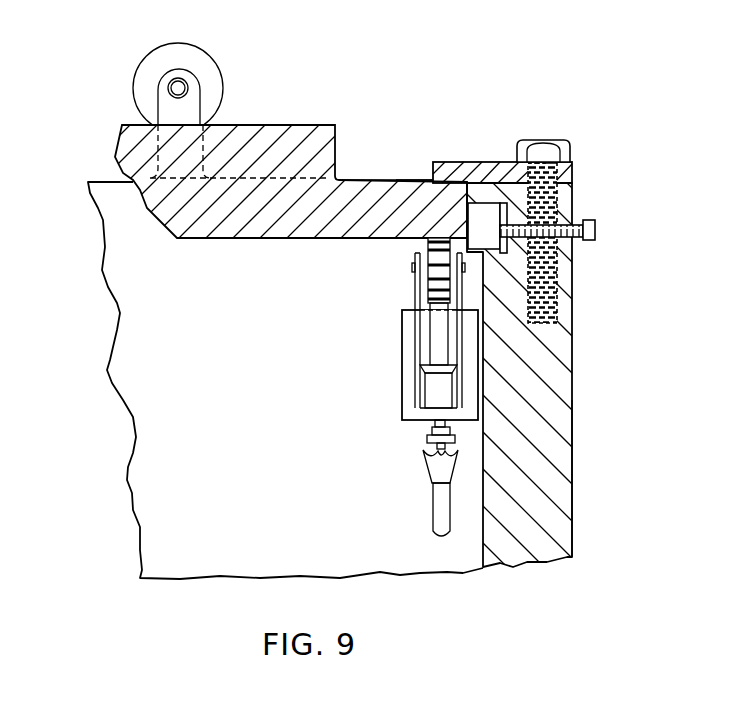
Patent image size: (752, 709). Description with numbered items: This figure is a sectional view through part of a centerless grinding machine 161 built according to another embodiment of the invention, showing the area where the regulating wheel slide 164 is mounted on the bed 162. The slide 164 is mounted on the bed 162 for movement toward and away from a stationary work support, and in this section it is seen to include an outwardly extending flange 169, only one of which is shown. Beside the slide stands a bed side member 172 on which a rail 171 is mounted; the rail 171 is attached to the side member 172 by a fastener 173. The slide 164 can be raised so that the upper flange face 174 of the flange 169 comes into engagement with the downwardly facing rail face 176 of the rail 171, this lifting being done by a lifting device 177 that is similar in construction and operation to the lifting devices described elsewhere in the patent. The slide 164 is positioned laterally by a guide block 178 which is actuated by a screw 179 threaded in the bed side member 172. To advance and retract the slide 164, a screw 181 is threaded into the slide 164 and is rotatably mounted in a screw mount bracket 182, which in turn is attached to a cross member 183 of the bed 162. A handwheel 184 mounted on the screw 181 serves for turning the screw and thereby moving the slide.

The centerless grinding machine 161 is at (626, 419).
The bed 162 is at (580, 511).
The regulating wheel slide 164 is at (335, 192).
The outwardly extending flange 169 is at (396, 180).
The rail 171 is at (560, 178).
The bed side member 172 is at (562, 347).
The fastener 173 is at (545, 145).
The upper flange face 174 is at (418, 180).
The downwardly facing rail face 176 is at (487, 173).
The lifting device 177 is at (396, 341).
The guide block 178 is at (505, 250).
The screw 179 is at (597, 230).
The screw 181 is at (197, 85).
The screw mount bracket 182 is at (187, 113).
The cross member 183 is at (132, 308).
The handwheel 184 is at (182, 50).